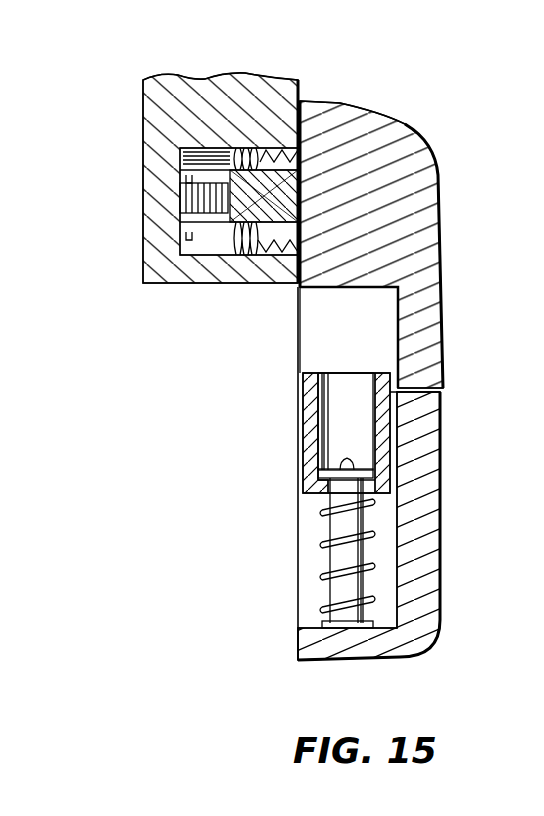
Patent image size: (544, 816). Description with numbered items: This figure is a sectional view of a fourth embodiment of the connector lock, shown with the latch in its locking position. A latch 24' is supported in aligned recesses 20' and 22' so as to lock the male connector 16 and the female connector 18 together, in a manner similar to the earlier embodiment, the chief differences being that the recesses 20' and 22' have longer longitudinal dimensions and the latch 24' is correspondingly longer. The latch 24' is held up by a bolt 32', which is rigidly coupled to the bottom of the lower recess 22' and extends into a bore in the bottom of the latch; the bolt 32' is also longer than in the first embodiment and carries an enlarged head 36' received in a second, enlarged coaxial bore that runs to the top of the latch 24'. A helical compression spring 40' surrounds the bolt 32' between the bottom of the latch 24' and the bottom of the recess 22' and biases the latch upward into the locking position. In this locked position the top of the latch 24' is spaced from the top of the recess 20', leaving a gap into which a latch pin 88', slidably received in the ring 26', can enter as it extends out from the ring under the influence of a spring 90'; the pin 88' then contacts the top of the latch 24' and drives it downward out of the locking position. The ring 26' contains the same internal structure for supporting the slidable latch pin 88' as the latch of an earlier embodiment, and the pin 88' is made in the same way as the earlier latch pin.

The male connector 16 is at (441, 190).
The female connector 18 is at (450, 406).
The recess 20' is at (394, 337).
The recess 22' is at (392, 526).
The latch 24' is at (316, 433).
The ring 26' is at (195, 178).
The bolt 32' is at (295, 550).
The enlarged head 36' is at (308, 425).
The helical compression spring 40' is at (309, 563).
The latch pin 88' is at (267, 201).
The spring 90' is at (160, 196).